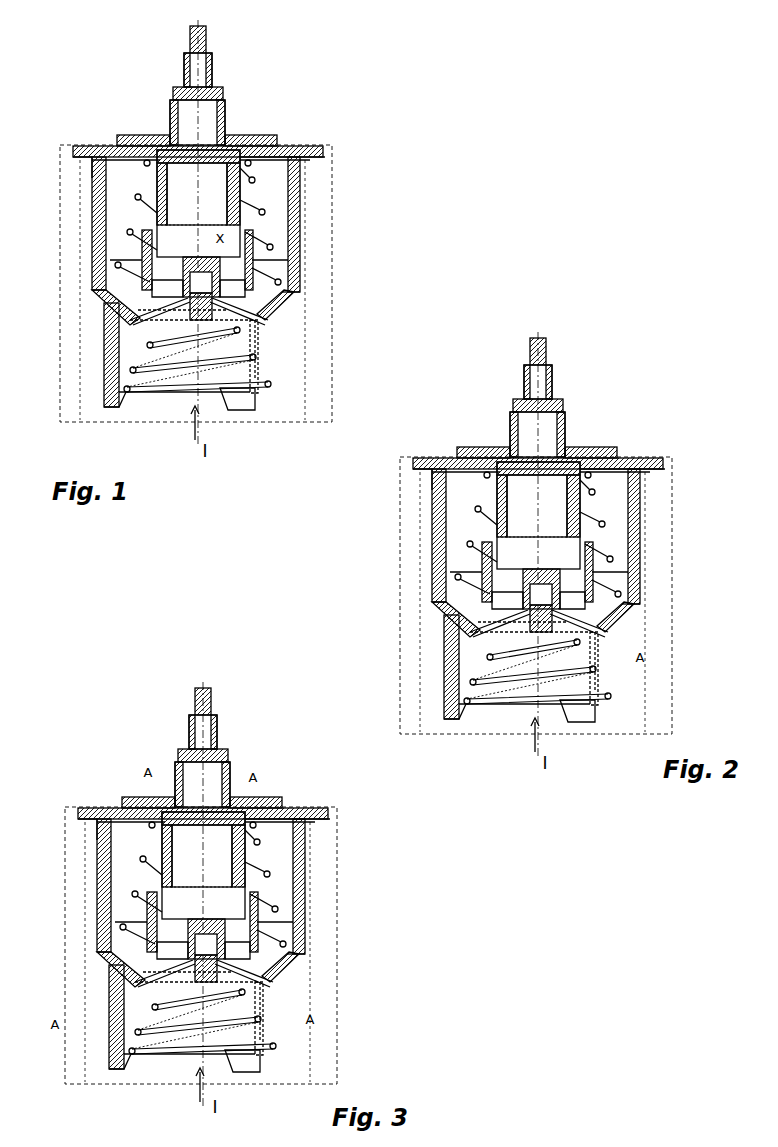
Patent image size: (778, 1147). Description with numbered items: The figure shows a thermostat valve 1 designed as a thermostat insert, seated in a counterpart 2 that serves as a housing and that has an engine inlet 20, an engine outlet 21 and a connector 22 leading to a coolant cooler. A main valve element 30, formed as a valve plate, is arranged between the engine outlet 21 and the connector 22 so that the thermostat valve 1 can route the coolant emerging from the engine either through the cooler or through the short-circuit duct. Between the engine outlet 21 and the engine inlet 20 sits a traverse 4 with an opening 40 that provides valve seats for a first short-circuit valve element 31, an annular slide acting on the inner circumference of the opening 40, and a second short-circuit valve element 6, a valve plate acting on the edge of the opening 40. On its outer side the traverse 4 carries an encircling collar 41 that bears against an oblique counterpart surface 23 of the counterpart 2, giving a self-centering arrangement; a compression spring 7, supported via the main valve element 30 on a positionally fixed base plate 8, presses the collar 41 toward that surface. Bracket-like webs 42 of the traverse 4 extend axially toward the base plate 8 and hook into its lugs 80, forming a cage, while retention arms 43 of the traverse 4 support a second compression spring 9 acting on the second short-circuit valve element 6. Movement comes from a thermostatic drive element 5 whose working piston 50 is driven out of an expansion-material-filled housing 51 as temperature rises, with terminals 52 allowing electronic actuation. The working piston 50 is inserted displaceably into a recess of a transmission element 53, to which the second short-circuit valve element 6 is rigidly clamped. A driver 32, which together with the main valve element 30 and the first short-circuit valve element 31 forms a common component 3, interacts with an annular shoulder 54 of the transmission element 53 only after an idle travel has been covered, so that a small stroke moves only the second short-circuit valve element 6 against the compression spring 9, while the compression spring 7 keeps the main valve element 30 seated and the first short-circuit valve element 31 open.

In FIG. 1, the thermostat valve 1 is at (300, 64).
In FIG. 2, the thermostat valve 1 is at (681, 354).
In FIG. 3, the thermostat valve 1 is at (125, 646).
In FIG. 1, the counterpart 2 is at (325, 163).
In FIG. 2, the counterpart 2 is at (647, 460).
In FIG. 3, the counterpart 2 is at (312, 806).
In FIG. 1, the common component 3 is at (128, 114).
In FIG. 2, the common component 3 is at (477, 408).
In FIG. 3, the common component 3 is at (108, 741).
In FIG. 1, the traverse 4 is at (300, 306).
In FIG. 2, the traverse 4 is at (591, 634).
In FIG. 3, the traverse 4 is at (257, 986).
In FIG. 1, the thermostatic drive element 5 is at (233, 73).
In FIG. 2, the thermostatic drive element 5 is at (558, 398).
In FIG. 3, the thermostatic drive element 5 is at (223, 748).
In FIG. 1, the second short-circuit valve element 6 is at (268, 338).
In FIG. 2, the second short-circuit valve element 6 is at (578, 680).
In FIG. 3, the second short-circuit valve element 6 is at (250, 1022).
In FIG. 1, the compression spring 7 is at (245, 216).
In FIG. 2, the compression spring 7 is at (595, 515).
In FIG. 3, the compression spring 7 is at (264, 865).
In FIG. 1, the base plate 8 is at (258, 136).
In FIG. 2, the base plate 8 is at (556, 435).
In FIG. 3, the base plate 8 is at (202, 775).
In FIG. 1, the compression spring 9 is at (138, 410).
In FIG. 2, the compression spring 9 is at (499, 745).
In FIG. 3, the compression spring 9 is at (167, 1093).
In FIG. 1, the engine inlet 20 is at (282, 412).
In FIG. 2, the engine inlet 20 is at (536, 614).
In FIG. 3, the engine inlet 20 is at (201, 966).
In FIG. 1, the engine outlet 21 is at (97, 222).
In FIG. 2, the engine outlet 21 is at (418, 553).
In FIG. 3, the engine outlet 21 is at (82, 903).
In FIG. 1, the connector to a coolant cooler 22 is at (90, 150).
In FIG. 2, the connector to a coolant cooler 22 is at (408, 438).
In FIG. 3, the connector to a coolant cooler 22 is at (78, 792).
In FIG. 1, the counterpart surface 23 is at (300, 272).
In FIG. 2, the counterpart surface 23 is at (677, 599).
In FIG. 3, the counterpart surface 23 is at (343, 948).
In FIG. 1, the main valve element 30 is at (268, 148).
In FIG. 2, the main valve element 30 is at (554, 447).
In FIG. 3, the main valve element 30 is at (209, 801).
In FIG. 1, the first short-circuit valve element 31 is at (297, 262).
In FIG. 2, the first short-circuit valve element 31 is at (589, 570).
In FIG. 3, the first short-circuit valve element 31 is at (257, 918).
In FIG. 1, the driver 32 is at (186, 278).
In FIG. 2, the driver 32 is at (463, 589).
In FIG. 3, the driver 32 is at (127, 960).
In FIG. 1, the opening 40 is at (262, 322).
In FIG. 2, the opening 40 is at (619, 657).
In FIG. 3, the opening 40 is at (278, 1007).
In FIG. 1, the collar 41 is at (292, 302).
In FIG. 2, the collar 41 is at (667, 619).
In FIG. 3, the collar 41 is at (319, 967).
In FIG. 1, the webs 42 is at (298, 205).
In FIG. 2, the webs 42 is at (668, 536).
In FIG. 3, the webs 42 is at (334, 886).
In FIG. 1, the retention arms 43 is at (113, 372).
In FIG. 2, the retention arms 43 is at (416, 678).
In FIG. 3, the retention arms 43 is at (82, 1027).
In FIG. 1, the working piston 50 is at (187, 288).
In FIG. 2, the working piston 50 is at (459, 622).
In FIG. 3, the working piston 50 is at (122, 941).
In FIG. 1, the housing 51 is at (142, 163).
In FIG. 2, the housing 51 is at (475, 472).
In FIG. 3, the housing 51 is at (140, 822).
In FIG. 1, the terminals 52 is at (188, 46).
In FIG. 2, the terminals 52 is at (505, 368).
In FIG. 3, the terminals 52 is at (170, 718).
In FIG. 1, the transmission element 53 is at (160, 322).
In FIG. 2, the transmission element 53 is at (482, 677).
In FIG. 3, the transmission element 53 is at (148, 1027).
In FIG. 1, the annular shoulder 54 is at (140, 262).
In FIG. 2, the annular shoulder 54 is at (477, 573).
In FIG. 3, the annular shoulder 54 is at (146, 927).
In FIG. 1, the lugs 80 is at (300, 178).
In FIG. 2, the lugs 80 is at (648, 487).
In FIG. 3, the lugs 80 is at (320, 834).